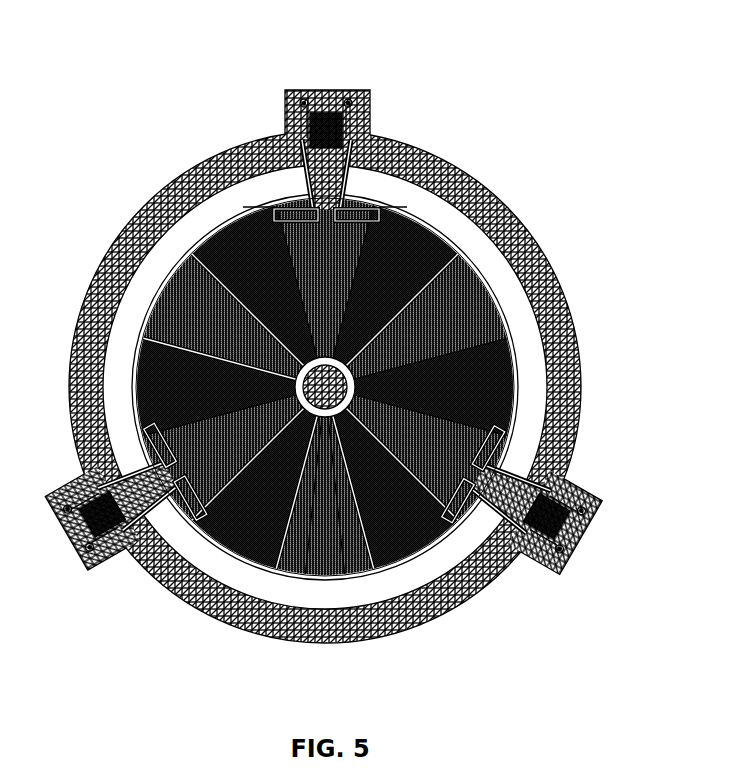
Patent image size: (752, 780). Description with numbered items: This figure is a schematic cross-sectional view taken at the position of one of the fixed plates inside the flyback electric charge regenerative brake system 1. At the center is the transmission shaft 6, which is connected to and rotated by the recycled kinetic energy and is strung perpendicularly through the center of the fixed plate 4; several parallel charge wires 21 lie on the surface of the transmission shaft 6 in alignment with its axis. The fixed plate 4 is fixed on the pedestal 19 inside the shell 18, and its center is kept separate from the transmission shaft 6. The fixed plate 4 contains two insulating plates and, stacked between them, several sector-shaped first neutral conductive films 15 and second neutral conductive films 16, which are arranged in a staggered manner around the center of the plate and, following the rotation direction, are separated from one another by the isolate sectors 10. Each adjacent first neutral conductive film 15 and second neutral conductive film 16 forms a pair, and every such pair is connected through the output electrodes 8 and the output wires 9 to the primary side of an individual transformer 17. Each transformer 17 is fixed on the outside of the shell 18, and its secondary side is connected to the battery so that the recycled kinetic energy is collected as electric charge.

The flyback electric charge regenerative brake system 1 is at (452, 80).
The fixed plate 4 is at (460, 249).
The transmission shaft 6 is at (316, 408).
The output electrode 8 is at (230, 235).
The output wire 9 is at (301, 170).
The isolate sector 10 is at (171, 301).
The first neutral conductive film 15 is at (212, 260).
The second neutral conductive film 16 is at (150, 376).
The transformer 17 is at (326, 108).
The shell 18 is at (146, 230).
The pedestal 19 is at (260, 211).
The charge wire 21 is at (158, 244).